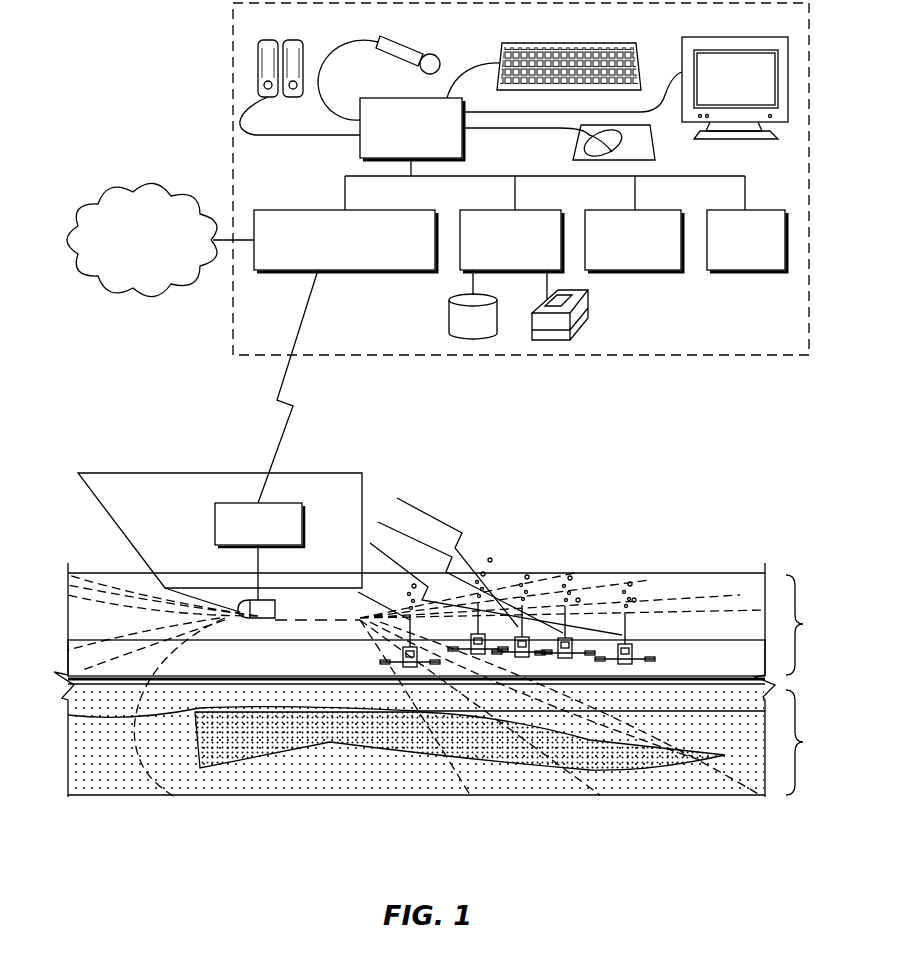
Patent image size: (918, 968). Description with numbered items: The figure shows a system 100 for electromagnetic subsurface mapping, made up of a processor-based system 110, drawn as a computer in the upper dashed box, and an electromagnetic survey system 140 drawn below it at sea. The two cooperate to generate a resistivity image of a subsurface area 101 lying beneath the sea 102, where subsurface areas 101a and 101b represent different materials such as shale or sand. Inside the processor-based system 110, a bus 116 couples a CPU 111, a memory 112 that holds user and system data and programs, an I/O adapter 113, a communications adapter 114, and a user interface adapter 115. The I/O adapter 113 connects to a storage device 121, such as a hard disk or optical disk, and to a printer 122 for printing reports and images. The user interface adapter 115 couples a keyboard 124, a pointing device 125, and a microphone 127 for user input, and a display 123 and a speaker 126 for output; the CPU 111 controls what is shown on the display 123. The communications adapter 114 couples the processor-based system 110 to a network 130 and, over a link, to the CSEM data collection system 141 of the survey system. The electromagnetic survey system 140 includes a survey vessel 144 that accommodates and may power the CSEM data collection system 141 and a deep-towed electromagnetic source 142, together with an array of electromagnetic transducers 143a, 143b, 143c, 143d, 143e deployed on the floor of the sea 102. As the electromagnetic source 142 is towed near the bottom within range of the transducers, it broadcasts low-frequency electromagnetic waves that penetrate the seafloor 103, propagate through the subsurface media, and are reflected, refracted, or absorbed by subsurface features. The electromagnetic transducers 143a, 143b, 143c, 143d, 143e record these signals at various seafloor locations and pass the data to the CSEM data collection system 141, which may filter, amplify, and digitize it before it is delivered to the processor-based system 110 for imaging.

The system 100 is at (122, 52).
The processor-based system 110 is at (233, 58).
The CPU 111 is at (738, 208).
The memory 112 is at (618, 208).
The I/O adapter 113 is at (491, 208).
The communications adapter 114 is at (308, 208).
The user interface adapter 115 is at (396, 97).
The bus 116 is at (548, 176).
The storage device 121 is at (450, 318).
The printer 122 is at (590, 312).
The display 123 is at (739, 36).
The keyboard 124 is at (566, 40).
The pointing device 125 is at (655, 150).
The speaker 126 is at (292, 36).
The microphone 127 is at (395, 38).
The network 130 is at (105, 195).
The electromagnetic survey system 140 is at (122, 437).
The CSEM data collection system 141 is at (228, 503).
The electromagnetic source 142 is at (276, 609).
The electromagnetic transducer 143a is at (405, 652).
The electromagnetic transducer 143b is at (480, 650).
The electromagnetic transducer 143c is at (525, 655).
The electromagnetic transducer 143d is at (568, 660).
The electromagnetic transducer 143e is at (628, 668).
The survey vessel 144 is at (173, 473).
The subsurface area 101 is at (453, 740).
The subsurface area 101a is at (256, 755).
The subsurface area 101b is at (372, 703).
The sea 102 is at (453, 624).
The seafloor 103 is at (68, 652).